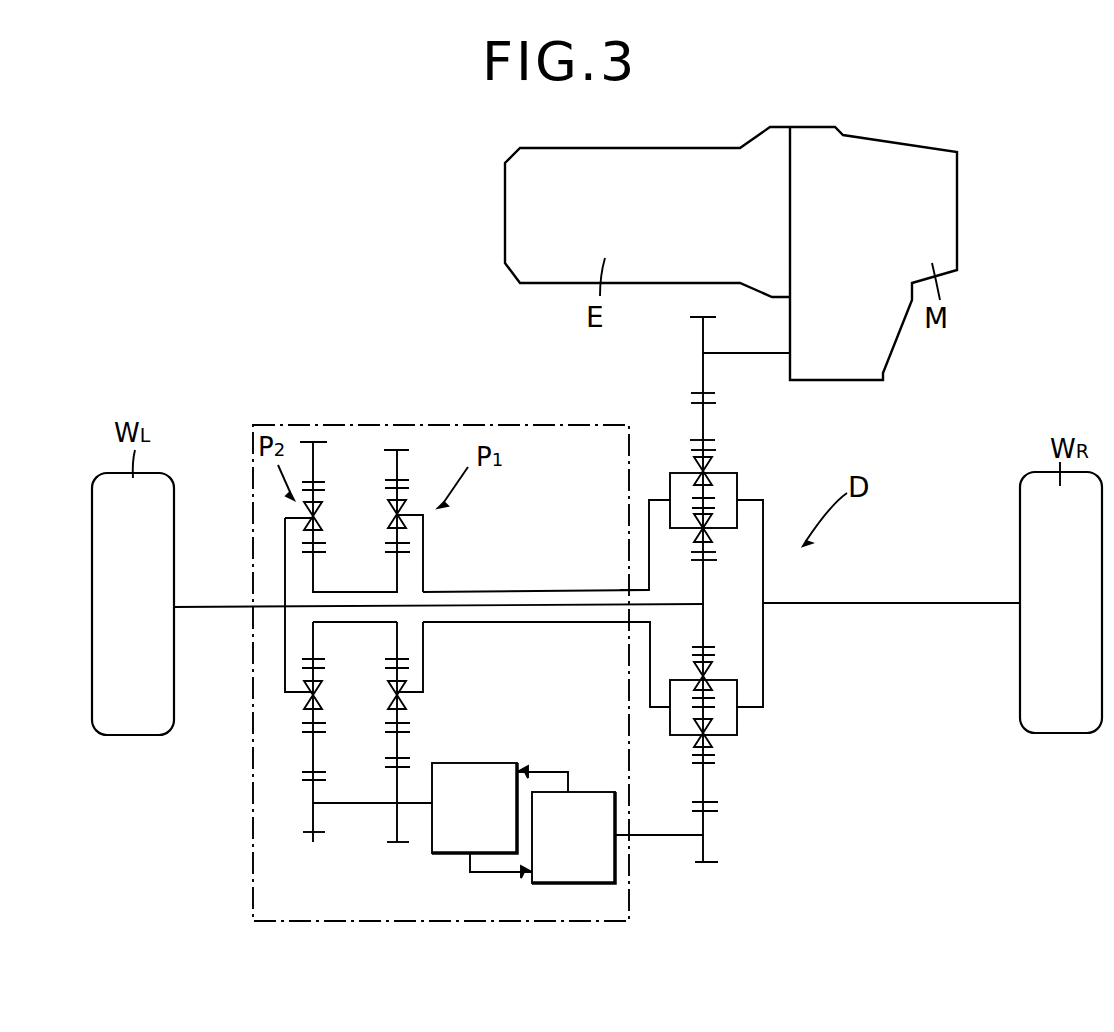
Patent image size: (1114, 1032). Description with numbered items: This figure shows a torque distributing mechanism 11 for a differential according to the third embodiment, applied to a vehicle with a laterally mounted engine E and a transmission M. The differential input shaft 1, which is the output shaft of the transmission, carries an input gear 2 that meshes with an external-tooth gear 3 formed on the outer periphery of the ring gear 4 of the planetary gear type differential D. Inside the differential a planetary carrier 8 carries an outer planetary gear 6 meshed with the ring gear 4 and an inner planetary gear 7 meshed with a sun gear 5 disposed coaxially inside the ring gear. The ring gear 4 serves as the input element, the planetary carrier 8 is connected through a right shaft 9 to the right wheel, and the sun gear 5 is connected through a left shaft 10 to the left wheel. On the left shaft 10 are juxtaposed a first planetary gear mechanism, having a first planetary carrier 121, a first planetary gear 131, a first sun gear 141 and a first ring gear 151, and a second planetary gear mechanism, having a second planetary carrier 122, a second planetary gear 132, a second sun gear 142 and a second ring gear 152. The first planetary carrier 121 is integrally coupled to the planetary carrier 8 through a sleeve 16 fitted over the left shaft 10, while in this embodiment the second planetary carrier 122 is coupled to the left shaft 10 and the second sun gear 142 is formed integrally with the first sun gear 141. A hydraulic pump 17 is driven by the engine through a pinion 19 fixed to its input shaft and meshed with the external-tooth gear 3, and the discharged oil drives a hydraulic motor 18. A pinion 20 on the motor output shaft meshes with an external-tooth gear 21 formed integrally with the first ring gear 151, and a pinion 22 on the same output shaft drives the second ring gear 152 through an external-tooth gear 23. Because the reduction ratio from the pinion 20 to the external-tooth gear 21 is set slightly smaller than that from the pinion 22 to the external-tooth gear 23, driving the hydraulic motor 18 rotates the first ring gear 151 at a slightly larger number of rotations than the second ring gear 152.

The differential input shaft 1 is at (753, 352).
The input gear 2 is at (713, 392).
The external-tooth gear 3 is at (690, 393).
The ring gear 4 is at (712, 440).
The sun gear 5 is at (708, 561).
The outer planetary gear 6 is at (692, 440).
The inner planetary gear 7 is at (715, 552).
The planetary carrier 8 is at (763, 517).
The right shaft 9 is at (910, 603).
The left shaft 10 is at (222, 606).
The torque distributing mechanism 11 is at (487, 424).
The first planetary carrier 121 is at (423, 537).
The second planetary carrier 122 is at (283, 528).
The first planetary gear 131 is at (405, 720).
The second planetary gear 132 is at (305, 724).
The first sun gear 141 is at (385, 548).
The second sun gear 142 is at (320, 554).
The first ring gear 151 is at (403, 733).
The second ring gear 152 is at (308, 732).
The sleeve 16 is at (546, 590).
The hydraulic pump 17 is at (617, 837).
The hydraulic motor 18 is at (474, 808).
The pinion 19 is at (715, 812).
The pinion 20 is at (395, 846).
The external-tooth gear 21 is at (388, 760).
The pinion 22 is at (315, 834).
The external-tooth gear 23 is at (322, 768).